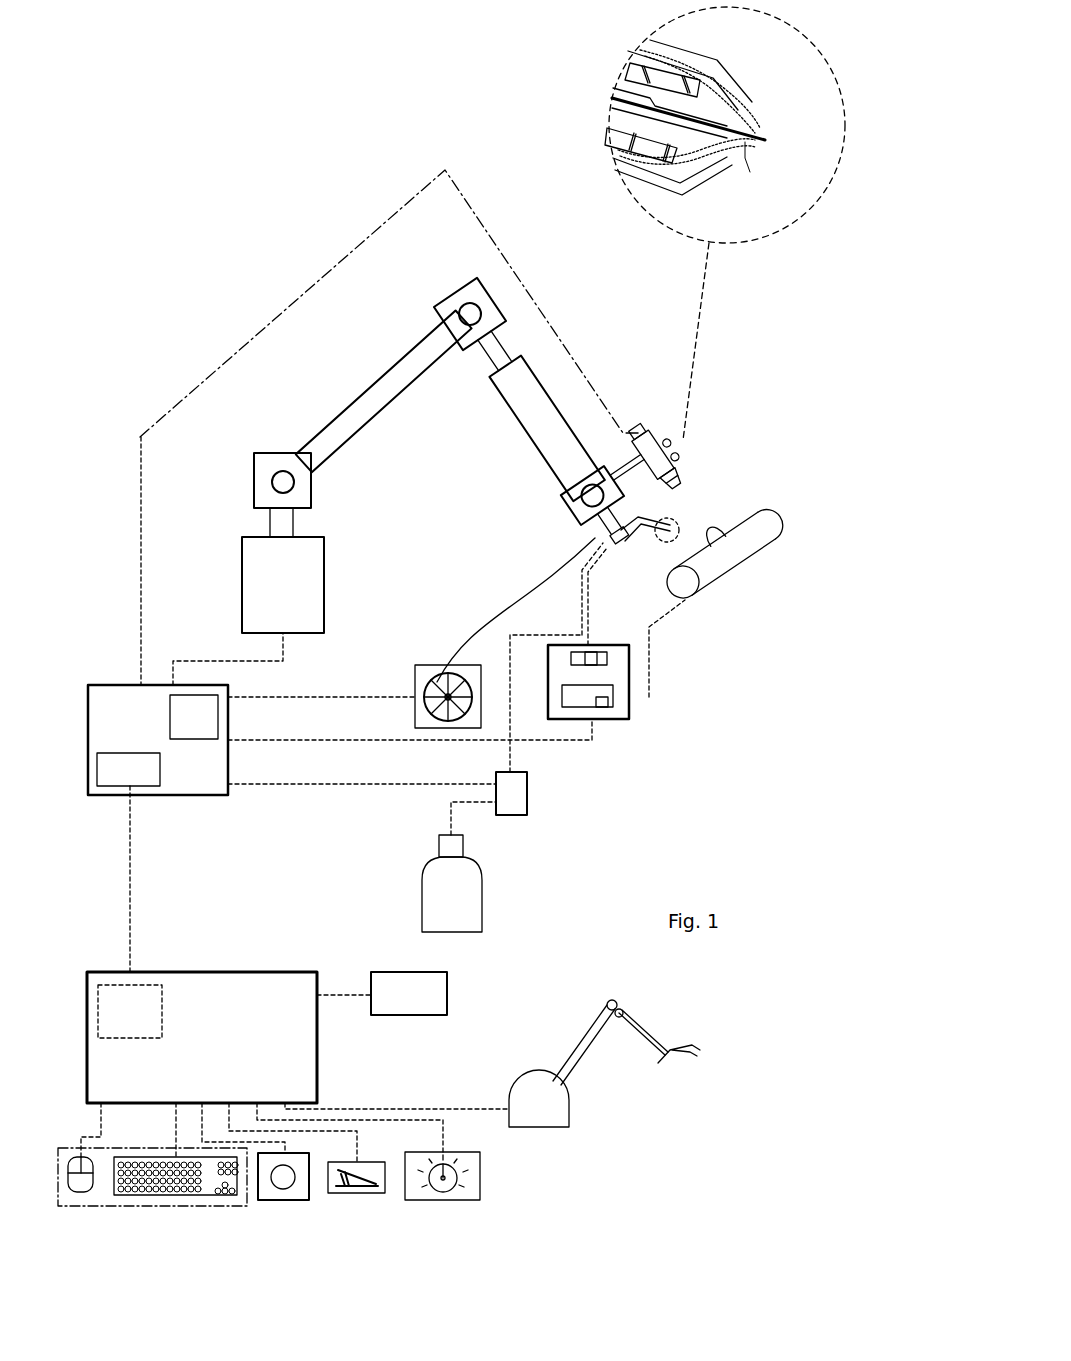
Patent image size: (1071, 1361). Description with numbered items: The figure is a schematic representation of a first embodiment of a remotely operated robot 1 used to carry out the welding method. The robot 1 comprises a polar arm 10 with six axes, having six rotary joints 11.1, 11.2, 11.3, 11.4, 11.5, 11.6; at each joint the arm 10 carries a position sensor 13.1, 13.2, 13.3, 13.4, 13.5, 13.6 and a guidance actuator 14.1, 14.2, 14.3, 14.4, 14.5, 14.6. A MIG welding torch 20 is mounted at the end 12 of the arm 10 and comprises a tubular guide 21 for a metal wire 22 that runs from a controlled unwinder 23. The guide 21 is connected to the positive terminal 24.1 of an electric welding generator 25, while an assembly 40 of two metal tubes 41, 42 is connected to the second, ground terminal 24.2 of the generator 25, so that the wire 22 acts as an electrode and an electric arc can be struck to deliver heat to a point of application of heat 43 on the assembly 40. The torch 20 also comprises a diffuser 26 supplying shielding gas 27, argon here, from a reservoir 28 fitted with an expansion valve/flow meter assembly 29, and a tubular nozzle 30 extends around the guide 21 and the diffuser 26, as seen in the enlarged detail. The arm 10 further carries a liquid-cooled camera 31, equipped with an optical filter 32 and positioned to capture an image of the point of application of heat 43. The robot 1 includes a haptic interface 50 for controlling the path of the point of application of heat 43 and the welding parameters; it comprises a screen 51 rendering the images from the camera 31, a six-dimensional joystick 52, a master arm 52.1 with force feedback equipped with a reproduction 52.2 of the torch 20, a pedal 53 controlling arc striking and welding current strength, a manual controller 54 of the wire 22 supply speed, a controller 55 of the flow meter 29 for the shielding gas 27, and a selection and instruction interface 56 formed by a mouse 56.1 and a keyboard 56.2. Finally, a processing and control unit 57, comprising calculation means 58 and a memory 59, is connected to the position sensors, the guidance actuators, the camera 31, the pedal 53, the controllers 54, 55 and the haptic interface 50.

The remotely operated robot 1 is at (246, 192).
The polar arm 10 is at (386, 386).
The first joint 11.1 is at (248, 570).
The first position sensor 13.1 is at (248, 570).
The first guidance actuator 14.1 is at (270, 537).
The second joint 11.2 is at (241, 472).
The second position sensor 13.2 is at (241, 472).
The second guidance actuator 14.2 is at (283, 482).
The third joint 11.3 is at (516, 280).
The third position sensor 13.3 is at (516, 280).
The third guidance actuator 14.3 is at (492, 306).
The fourth joint 11.4 is at (558, 397).
The fourth position sensor 13.4 is at (558, 397).
The fourth guidance actuator 14.4 is at (500, 346).
The fifth joint 11.5 is at (546, 489).
The fifth position sensor 13.5 is at (546, 489).
The fifth guidance actuator 14.5 is at (574, 491).
The sixth joint 11.6 is at (544, 556).
The sixth position sensor 13.6 is at (544, 556).
The sixth guidance actuator 14.6 is at (600, 520).
The end of the arm 12 is at (617, 551).
The MIG welding torch 20 is at (636, 540).
The tubular guide 21 is at (733, 160).
The metal wire 22 is at (772, 142).
The controlled unwinder 23 is at (433, 680).
The positive terminal 24.1 is at (607, 657).
The ground terminal 24.2 is at (600, 708).
The electric welding generator 25 is at (634, 712).
The diffuser 26 is at (612, 128).
The shielding gas 27 is at (758, 130).
The reservoir 28 is at (482, 904).
The expansion valve/flow meter assembly 29 is at (527, 790).
The tubular nozzle 30 is at (645, 41).
The liquid-cooled camera 31 is at (653, 437).
The optical filter 32 is at (688, 486).
The assembly of two metal tubes 40 is at (747, 572).
The metal tube 41 is at (717, 576).
The metal tube 42 is at (758, 548).
The point of application of heat 43 is at (716, 545).
The haptic interface 50 is at (295, 1047).
The screen 51 is at (157, 985).
The 6D joystick 52 is at (275, 1200).
The master arm with force feedback 52.1 is at (612, 1066).
The reproduction of the welding torch 52.2 is at (676, 1052).
The pedal 53 is at (347, 1193).
The manual controller of wire supply speed 54 is at (450, 1200).
The controller of the flow meter 55 is at (447, 1002).
The selection and instruction interface 56 is at (147, 1174).
The mouse 56.1 is at (78, 1192).
The keyboard 56.2 is at (170, 1195).
The processing and control unit 57 is at (325, 704).
The calculation means 58 is at (150, 786).
The memory 59 is at (192, 740).